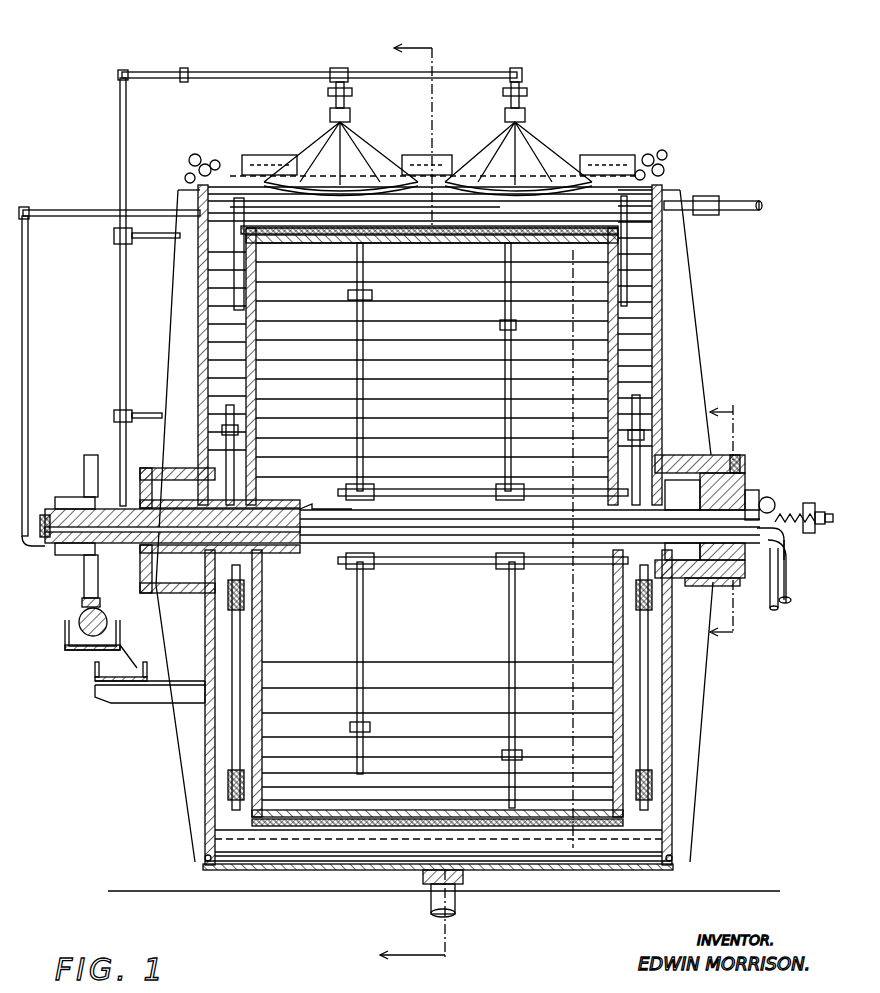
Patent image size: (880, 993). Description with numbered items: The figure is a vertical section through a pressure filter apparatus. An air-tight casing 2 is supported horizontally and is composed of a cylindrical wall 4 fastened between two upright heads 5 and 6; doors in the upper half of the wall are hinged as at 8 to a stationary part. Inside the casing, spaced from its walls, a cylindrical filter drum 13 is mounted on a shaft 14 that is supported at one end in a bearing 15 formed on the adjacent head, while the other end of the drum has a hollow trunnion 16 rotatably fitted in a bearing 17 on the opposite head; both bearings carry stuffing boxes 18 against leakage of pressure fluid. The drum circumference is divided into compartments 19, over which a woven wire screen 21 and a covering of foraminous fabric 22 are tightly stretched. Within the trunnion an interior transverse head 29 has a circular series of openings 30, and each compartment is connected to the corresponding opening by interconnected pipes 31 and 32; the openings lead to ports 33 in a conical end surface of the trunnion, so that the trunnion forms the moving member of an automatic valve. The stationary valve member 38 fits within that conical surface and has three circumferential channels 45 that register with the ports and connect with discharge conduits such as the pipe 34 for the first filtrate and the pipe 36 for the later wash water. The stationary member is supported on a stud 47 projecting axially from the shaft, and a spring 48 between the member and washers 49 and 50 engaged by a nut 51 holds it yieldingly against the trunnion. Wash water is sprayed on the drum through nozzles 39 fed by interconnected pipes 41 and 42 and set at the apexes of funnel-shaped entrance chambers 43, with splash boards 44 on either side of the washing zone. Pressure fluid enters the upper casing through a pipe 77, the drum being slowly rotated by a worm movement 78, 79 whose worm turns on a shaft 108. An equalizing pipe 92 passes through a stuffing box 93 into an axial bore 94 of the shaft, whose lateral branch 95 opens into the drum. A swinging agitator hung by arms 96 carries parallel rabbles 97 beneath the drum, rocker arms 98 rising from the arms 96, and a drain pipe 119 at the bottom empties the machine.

The air-tight casing 2 is at (198, 294).
The cylindrical wall 4 is at (320, 872).
The upright head 5 is at (205, 749).
The upright head 6 is at (660, 340).
The hinge 8 is at (805, 470).
The cylindrical filter drum 13 is at (615, 373).
The shaft 14 is at (330, 545).
The bearing 15 is at (172, 498).
The hollow trunnion 16 is at (676, 470).
The bearing 17 is at (730, 456).
The stuffing boxes 18 is at (760, 437).
The compartments 19 is at (430, 246).
The woven wire screen 21 is at (490, 232).
The foraminous fabric covering 22 is at (295, 236).
The interior transverse head 29 is at (700, 545).
The openings 30 is at (700, 495).
The pipes 31 is at (366, 387).
The pipes 32 is at (436, 489).
The ports 33 is at (742, 472).
The liquid discharge conduit 34 is at (792, 587).
The liquid discharge conduit 36 is at (779, 607).
The stationary valve member 38 is at (771, 497).
The nozzles 39 is at (350, 100).
The pipe 41 is at (280, 65).
The pipe 42 is at (118, 296).
The funnel-shaped entrance chambers 43 is at (350, 146).
The splash boards 44 is at (290, 170).
The circumferential channels 45 is at (755, 490).
The stud 47 is at (698, 586).
The spring 48 is at (795, 506).
The washer 49 is at (790, 550).
The washer 50 is at (810, 503).
The nut 51 is at (822, 525).
The pressure fluid pipe 77 is at (735, 200).
The worm 78 is at (108, 619).
The worm wheel 79 is at (82, 600).
The equalizing pipe 92 is at (105, 210).
The stuffing box 93 is at (46, 540).
The axial bore 94 is at (110, 520).
The lateral branch 95 is at (296, 545).
The arms 96 is at (242, 680).
The rabbles 97 is at (390, 857).
The rocker arms 98 is at (236, 446).
The shaft of the worm 108 is at (70, 633).
The drain pipe 119 is at (456, 897).